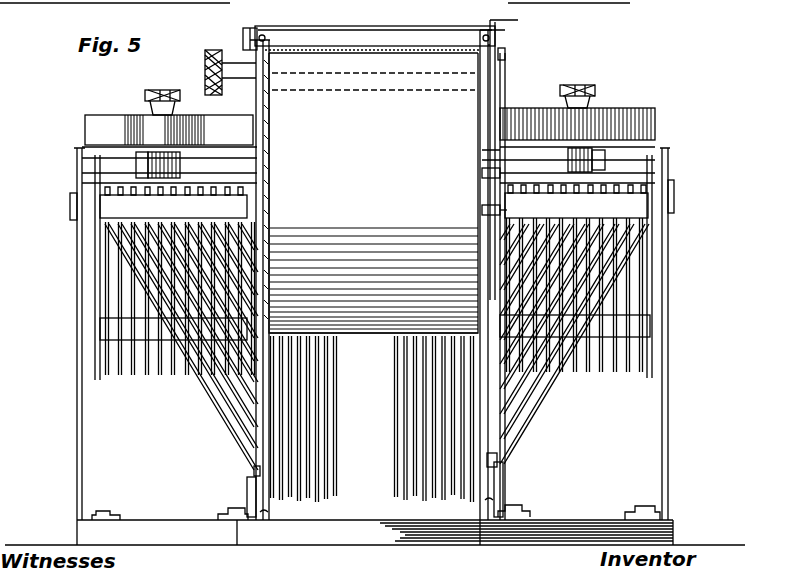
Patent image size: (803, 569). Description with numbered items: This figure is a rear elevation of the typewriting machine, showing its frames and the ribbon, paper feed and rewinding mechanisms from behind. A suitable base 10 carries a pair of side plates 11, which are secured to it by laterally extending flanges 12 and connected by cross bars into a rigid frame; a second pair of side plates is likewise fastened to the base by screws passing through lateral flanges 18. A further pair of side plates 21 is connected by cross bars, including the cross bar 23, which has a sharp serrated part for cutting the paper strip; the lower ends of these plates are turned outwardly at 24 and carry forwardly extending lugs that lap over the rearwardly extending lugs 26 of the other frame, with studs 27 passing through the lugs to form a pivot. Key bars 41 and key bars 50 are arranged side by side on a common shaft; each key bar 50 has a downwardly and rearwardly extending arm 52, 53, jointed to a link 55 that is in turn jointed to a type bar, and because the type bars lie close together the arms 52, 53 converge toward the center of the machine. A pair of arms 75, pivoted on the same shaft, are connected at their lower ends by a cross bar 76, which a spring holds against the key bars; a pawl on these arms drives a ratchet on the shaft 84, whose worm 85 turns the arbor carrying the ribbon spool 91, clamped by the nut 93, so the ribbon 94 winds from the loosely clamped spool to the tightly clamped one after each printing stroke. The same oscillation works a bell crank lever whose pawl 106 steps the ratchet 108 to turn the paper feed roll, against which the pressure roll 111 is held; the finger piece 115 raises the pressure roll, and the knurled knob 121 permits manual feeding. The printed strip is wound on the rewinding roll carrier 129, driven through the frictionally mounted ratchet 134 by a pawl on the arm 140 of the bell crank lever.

The base 10 is at (418, 533).
The side plates 11 is at (82, 393).
The laterally extending flanges 12 is at (118, 518).
The lateral flanges 18 is at (243, 520).
The side plates 21 is at (233, 420).
The cross bar 23 is at (340, 38).
The outwardly turned lower ends 24 is at (255, 470).
The rearwardly extending lugs 26 is at (270, 36).
The studs 27 is at (503, 482).
The key bar 41 is at (118, 372).
The key bar 50 is at (108, 372).
The arm 52 is at (244, 400).
The arm 53 is at (320, 500).
The link 55 is at (413, 415).
The arms 75 is at (676, 283).
The cross bar 76 is at (112, 332).
The shaft 84 is at (628, 157).
The worm 85 is at (148, 163).
The ribbon spool 91 is at (100, 115).
The clamping nut 93 is at (147, 92).
The ribbon 94 is at (495, 122).
The pawl 106 is at (505, 92).
The ratchet 108 is at (504, 57).
The pressure roll 111 is at (375, 26).
The finger piece 115 is at (252, 28).
The knurled knob 121 is at (205, 62).
The rewinding roll carrier 129 is at (272, 220).
The ratchet 134 is at (500, 211).
The arm 140 is at (500, 173).